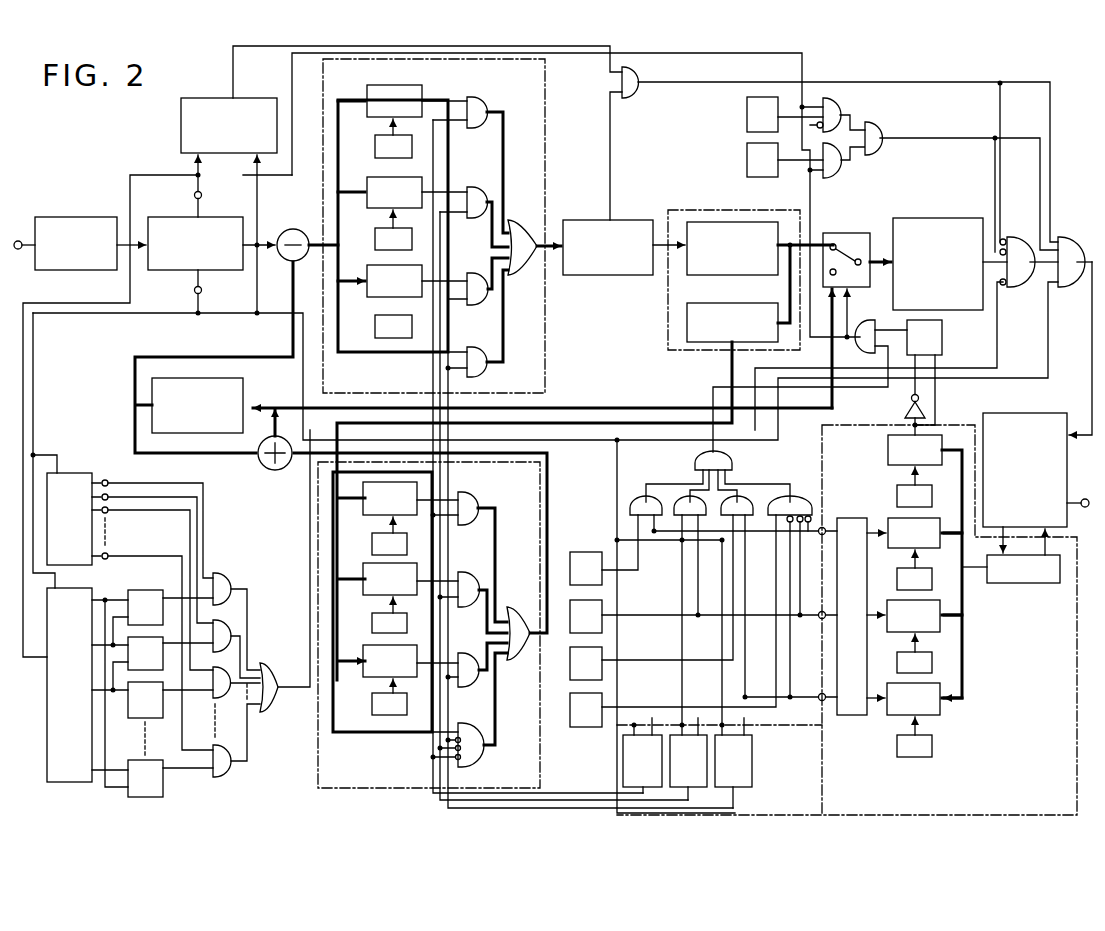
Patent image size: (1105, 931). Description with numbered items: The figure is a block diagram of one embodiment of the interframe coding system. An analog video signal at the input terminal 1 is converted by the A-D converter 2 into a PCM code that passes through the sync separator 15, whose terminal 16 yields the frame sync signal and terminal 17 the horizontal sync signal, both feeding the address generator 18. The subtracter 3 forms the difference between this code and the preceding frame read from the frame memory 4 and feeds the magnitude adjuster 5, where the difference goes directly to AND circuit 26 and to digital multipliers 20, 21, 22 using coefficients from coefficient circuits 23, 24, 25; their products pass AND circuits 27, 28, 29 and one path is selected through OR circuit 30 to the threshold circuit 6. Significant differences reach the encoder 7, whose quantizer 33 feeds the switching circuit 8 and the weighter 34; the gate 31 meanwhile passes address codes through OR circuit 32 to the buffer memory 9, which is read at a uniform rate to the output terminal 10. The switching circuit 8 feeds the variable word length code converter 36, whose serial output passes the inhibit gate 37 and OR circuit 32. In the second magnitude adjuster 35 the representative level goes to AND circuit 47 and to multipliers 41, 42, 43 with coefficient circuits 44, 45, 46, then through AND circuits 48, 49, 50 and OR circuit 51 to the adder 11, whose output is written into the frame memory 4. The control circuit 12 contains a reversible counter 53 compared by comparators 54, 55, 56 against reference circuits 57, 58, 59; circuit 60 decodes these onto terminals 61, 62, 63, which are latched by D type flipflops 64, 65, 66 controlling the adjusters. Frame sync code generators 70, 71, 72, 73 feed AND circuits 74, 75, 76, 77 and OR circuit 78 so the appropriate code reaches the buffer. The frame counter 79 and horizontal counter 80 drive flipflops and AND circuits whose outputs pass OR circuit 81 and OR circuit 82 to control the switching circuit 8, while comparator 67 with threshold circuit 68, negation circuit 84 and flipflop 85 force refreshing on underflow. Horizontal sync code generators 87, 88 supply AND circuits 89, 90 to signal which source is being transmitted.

The input terminal 1 is at (19, 240).
The A-D converter 2 is at (88, 217).
The subtracter 3 is at (299, 262).
The frame memory 4 is at (243, 394).
The magnitude adjuster 5 is at (545, 345).
The threshold circuit 6 is at (622, 220).
The encoder 7 is at (692, 212).
The switching circuit 8 is at (868, 230).
The buffer memory 9 is at (1020, 413).
The output terminal 10 is at (1082, 499).
The adder 11 is at (260, 462).
The control circuit 12 is at (1000, 815).
The sync separator 15 is at (220, 218).
The terminal 16 is at (194, 290).
The terminal 17 is at (194, 195).
The address generator 18 is at (216, 98).
The digital multiplier 20 is at (367, 292).
The digital multiplier 21 is at (367, 204).
The digital multiplier 22 is at (395, 85).
The coefficient circuit 23 is at (375, 333).
The coefficient circuit 24 is at (375, 241).
The coefficient circuit 25 is at (375, 147).
The AND circuit 26 is at (484, 366).
The AND circuit 27 is at (486, 304).
The AND circuit 28 is at (486, 218).
The AND circuit 29 is at (486, 128).
The OR circuit 30 is at (520, 222).
The gate 31 is at (636, 96).
The OR circuit 32 is at (1066, 240).
The quantizer 33 is at (706, 278).
The weighter 34 is at (740, 303).
The second magnitude adjuster 35 is at (455, 787).
The variable word length code converter 36 is at (940, 218).
The inhibit gate 37 is at (1020, 240).
The digital multiplier 41 is at (365, 678).
The digital multiplier 42 is at (365, 596).
The digital multiplier 43 is at (363, 498).
The coefficient circuit 44 is at (372, 708).
The coefficient circuit 45 is at (372, 628).
The coefficient circuit 46 is at (372, 545).
The AND circuit 47 is at (476, 720).
The AND circuit 48 is at (474, 662).
The AND circuit 49 is at (470, 576).
The AND circuit 50 is at (470, 494).
The OR circuit 51 is at (525, 612).
The reversible counter 53 is at (1012, 583).
The comparator 54 is at (887, 710).
The comparator 55 is at (887, 628).
The comparator 56 is at (888, 545).
The reference circuit 57 is at (897, 745).
The reference circuit 58 is at (897, 662).
The reference circuit 59 is at (897, 582).
The circuit 60 is at (847, 715).
The terminal 61 is at (791, 708).
The terminal 62 is at (719, 626).
The terminal 63 is at (745, 543).
The D type flipflop 64 is at (752, 768).
The D type flipflop 65 is at (690, 787).
The D type flipflop 66 is at (623, 760).
The comparator 67 is at (888, 448).
The threshold circuit 68 is at (897, 488).
The frame sync code generator 70 is at (570, 715).
The frame sync code generator 71 is at (570, 663).
The frame sync code generator 72 is at (570, 630).
The frame sync code generator 73 is at (570, 552).
The AND circuit 74 is at (786, 502).
The AND circuit 75 is at (734, 502).
The AND circuit 76 is at (680, 502).
The AND circuit 77 is at (644, 502).
The OR circuit 78 is at (730, 456).
The frame counter 79 is at (65, 473).
The horizontal counter 80 is at (47, 745).
The OR circuit 81 is at (270, 672).
The OR circuit 82 is at (866, 352).
The negation circuit 84 is at (902, 408).
The flipflop 85 is at (942, 342).
The horizontal sync code generator 87 is at (747, 112).
The horizontal sync code generator 88 is at (747, 155).
The AND circuit 89 is at (836, 111).
The AND circuit 90 is at (842, 172).